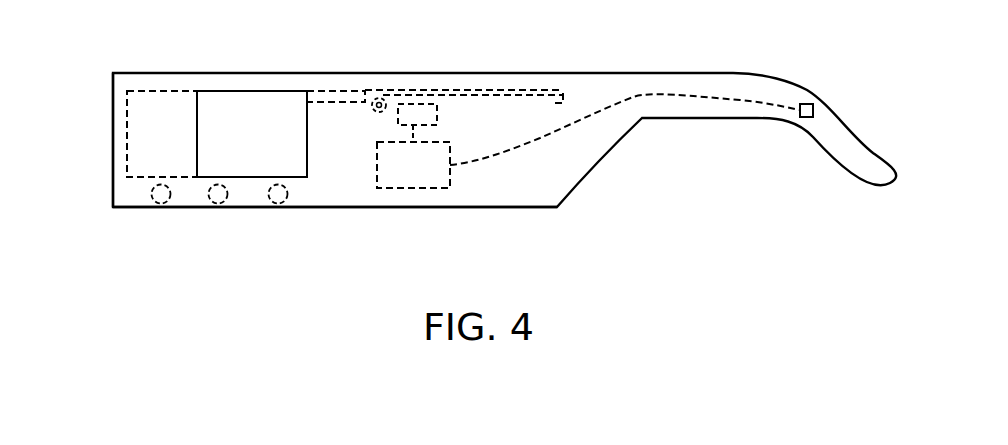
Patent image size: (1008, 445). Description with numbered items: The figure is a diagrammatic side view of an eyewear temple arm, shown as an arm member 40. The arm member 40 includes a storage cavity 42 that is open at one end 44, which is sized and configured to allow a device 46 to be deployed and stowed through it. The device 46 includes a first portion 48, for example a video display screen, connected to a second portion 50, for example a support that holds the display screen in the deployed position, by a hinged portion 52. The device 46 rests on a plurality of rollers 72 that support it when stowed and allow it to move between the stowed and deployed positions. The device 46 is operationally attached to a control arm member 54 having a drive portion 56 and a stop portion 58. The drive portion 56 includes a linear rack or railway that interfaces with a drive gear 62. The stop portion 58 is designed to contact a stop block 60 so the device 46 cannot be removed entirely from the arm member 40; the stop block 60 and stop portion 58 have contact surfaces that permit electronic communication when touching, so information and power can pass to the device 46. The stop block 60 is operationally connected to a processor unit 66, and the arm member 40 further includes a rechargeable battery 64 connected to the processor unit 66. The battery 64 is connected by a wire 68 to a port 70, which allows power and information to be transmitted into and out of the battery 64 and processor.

The arm member 40 is at (317, 73).
The storage cavity 42 is at (333, 197).
The open end 44 is at (113, 107).
The device 46 is at (267, 90).
The first portion 48 is at (143, 90).
The second portion 50 is at (223, 90).
The hinged portion 52 is at (199, 90).
The control arm member 54 is at (352, 90).
The drive portion 56 is at (475, 90).
The stop portion 58 is at (567, 90).
The stop block 60 is at (437, 105).
The drive gear 62 is at (372, 109).
The battery 64 is at (410, 190).
The processor unit 66 is at (428, 127).
The wire 68 is at (636, 96).
The port 70 is at (806, 103).
The rollers 72 is at (287, 202).